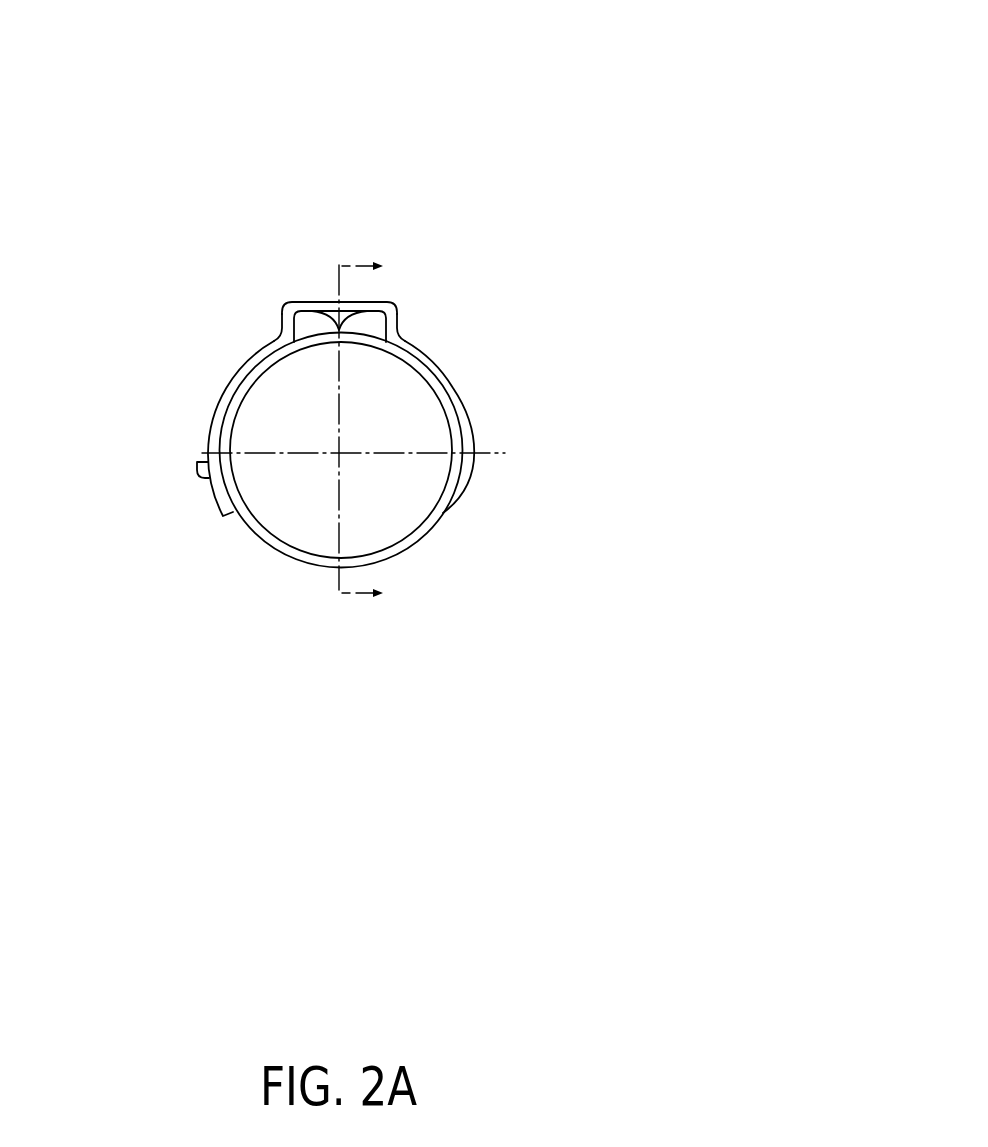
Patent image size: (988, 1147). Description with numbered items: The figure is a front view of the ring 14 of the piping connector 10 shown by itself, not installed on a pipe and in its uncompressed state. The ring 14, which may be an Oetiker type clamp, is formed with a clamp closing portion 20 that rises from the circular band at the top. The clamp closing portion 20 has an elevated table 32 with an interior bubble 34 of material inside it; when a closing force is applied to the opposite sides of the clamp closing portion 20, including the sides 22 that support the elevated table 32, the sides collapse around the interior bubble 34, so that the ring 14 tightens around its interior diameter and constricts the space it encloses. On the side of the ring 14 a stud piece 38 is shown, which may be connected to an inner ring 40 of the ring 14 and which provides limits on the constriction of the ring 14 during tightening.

The piping connector 10 is at (581, 116).
The ring 14 is at (413, 540).
The clamp closing portion 20 is at (322, 300).
The legs of tab 22 is at (284, 310).
The elevated table 32 is at (309, 299).
The interior bubble 34 is at (357, 316).
The stud piece 38 is at (200, 463).
The inner ring 40 is at (230, 419).